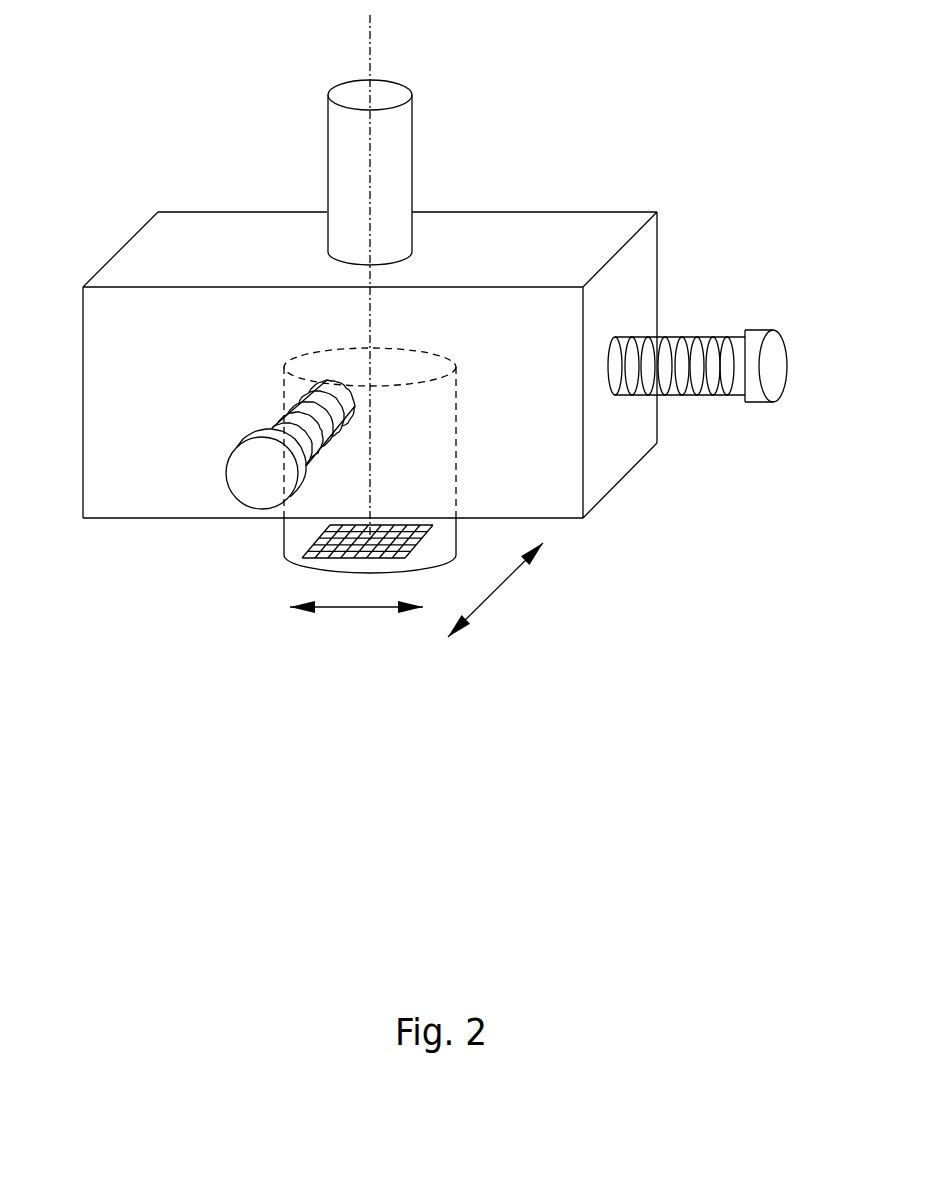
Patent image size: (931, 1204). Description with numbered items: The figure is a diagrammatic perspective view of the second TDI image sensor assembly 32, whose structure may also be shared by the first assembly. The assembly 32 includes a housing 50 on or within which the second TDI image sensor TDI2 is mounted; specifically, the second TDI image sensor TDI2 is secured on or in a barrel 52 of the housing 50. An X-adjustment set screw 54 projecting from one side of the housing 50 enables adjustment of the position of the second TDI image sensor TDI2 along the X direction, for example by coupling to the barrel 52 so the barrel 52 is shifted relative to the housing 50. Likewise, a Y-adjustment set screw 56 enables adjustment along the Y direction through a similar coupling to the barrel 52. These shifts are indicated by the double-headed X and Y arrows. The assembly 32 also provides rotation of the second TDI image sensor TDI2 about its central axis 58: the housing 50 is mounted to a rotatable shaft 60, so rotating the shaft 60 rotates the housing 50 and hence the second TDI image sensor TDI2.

The second TDI image sensor assembly 32 is at (568, 116).
The housing 50 is at (273, 233).
The barrel 52 is at (298, 565).
The X-adjustment set screw 54 is at (718, 346).
The Y-adjustment set screw 56 is at (243, 473).
The central axis 58 is at (372, 48).
The rotatable shaft 60 is at (394, 155).
The second TDI image sensor TDI2 is at (318, 530).